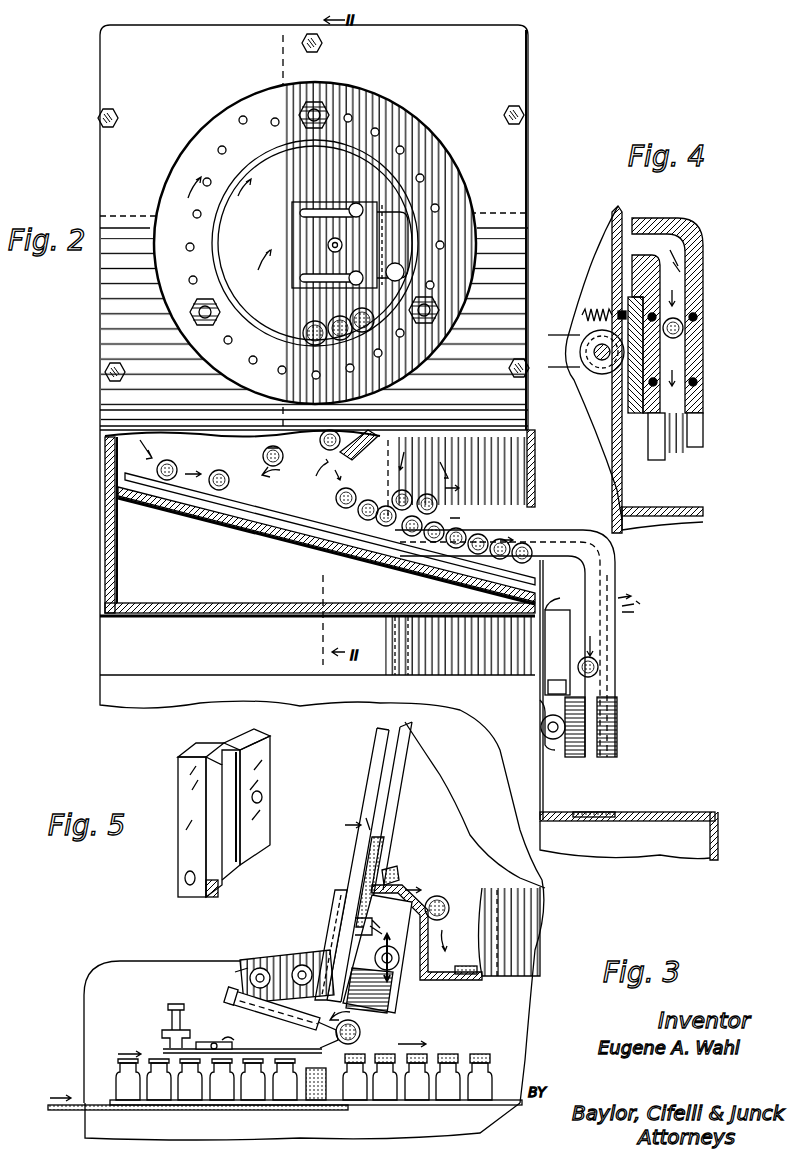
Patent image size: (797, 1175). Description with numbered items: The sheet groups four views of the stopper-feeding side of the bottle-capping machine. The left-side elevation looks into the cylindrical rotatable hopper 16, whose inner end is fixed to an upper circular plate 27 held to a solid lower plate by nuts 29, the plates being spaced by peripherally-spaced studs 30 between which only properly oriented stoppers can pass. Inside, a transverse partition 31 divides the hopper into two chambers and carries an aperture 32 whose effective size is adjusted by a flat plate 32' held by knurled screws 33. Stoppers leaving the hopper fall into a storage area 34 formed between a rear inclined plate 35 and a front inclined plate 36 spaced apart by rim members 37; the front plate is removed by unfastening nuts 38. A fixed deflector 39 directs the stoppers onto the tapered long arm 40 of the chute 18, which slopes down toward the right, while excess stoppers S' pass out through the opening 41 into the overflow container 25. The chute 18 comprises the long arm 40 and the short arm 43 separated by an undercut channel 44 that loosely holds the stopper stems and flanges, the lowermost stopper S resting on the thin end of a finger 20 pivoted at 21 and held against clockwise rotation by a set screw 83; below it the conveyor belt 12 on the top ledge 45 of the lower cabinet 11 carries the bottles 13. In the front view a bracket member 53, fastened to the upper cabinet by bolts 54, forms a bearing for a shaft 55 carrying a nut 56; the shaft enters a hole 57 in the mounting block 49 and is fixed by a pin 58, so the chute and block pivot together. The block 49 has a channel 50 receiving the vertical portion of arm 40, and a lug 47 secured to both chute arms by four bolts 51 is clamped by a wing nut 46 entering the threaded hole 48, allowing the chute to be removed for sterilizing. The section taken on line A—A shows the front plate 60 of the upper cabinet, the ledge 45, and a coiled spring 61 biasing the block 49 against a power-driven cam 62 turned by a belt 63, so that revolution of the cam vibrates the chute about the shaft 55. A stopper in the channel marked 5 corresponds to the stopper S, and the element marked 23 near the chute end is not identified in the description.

In FIG. 3, the lower cabinet 11 is at (92, 1131).
In FIG. 3, the conveyor belt 12 is at (80, 1090).
In FIG. 3, the bottles 13 is at (132, 1080).
In FIG. 2, the rotatable hopper 16 is at (232, 280).
In FIG. 2, the chute 18 is at (612, 700).
In FIG. 4, the chute 18 is at (700, 378).
In FIG. 3, the finger 20 is at (240, 1052).
In FIG. 3, the pivot 21 is at (228, 1040).
In FIG. 3, the lever 23 is at (330, 1034).
In FIG. 3, the overflow container 25 is at (436, 988).
In FIG. 2, the upper circular plate 27 is at (170, 193).
In FIG. 2, the nuts 29 is at (345, 95).
In FIG. 2, the studs 30 is at (420, 178).
In FIG. 2, the transverse partition 31 is at (195, 178).
In FIG. 2, the aperture 32 is at (396, 219).
In FIG. 2, the flat plate 32' is at (275, 276).
In FIG. 2, the knurled screws 33 is at (312, 205).
In FIG. 2, the storage area 34 is at (180, 522).
In FIG. 2, the rear inclined plate 35 is at (110, 560).
In FIG. 2, the front inclined plate 36 is at (110, 432).
In FIG. 2, the rim members 37 is at (108, 478).
In FIG. 2, the nuts 38 is at (302, 43).
In FIG. 2, the fixed deflector 39 is at (336, 496).
In FIG. 2, the long arm 40 is at (240, 505).
In FIG. 4, the long arm 40 is at (660, 450).
In FIG. 3, the long arm 40 is at (365, 866).
In FIG. 2, the opening 41 is at (540, 514).
In FIG. 2, the short arm 43 is at (566, 545).
In FIG. 4, the short arm 43 is at (695, 430).
In FIG. 3, the short arm 43 is at (380, 845).
In FIG. 2, the channel 44 is at (600, 580).
In FIG. 4, the channel 44 is at (680, 258).
In FIG. 4, the top ledge 45 is at (676, 512).
In FIG. 3, the top ledge 45 is at (660, 812).
In FIG. 3, the wing nut 46 is at (400, 985).
In FIG. 3, the lug 47 is at (396, 1008).
In FIG. 5, the threaded hole 48 is at (262, 797).
In FIG. 2, the mounting block 49 is at (548, 665).
In FIG. 4, the mounting block 49 is at (630, 405).
In FIG. 5, the mounting block 49 is at (182, 780).
In FIG. 3, the mounting block 49 is at (340, 897).
In FIG. 5, the channel 50 is at (214, 752).
In FIG. 4, the bolts 51 is at (697, 316).
In FIG. 3, the bolts 51 is at (442, 896).
In FIG. 2, the bracket member 53 is at (545, 712).
In FIG. 3, the bracket member 53 is at (280, 966).
In FIG. 2, the bolts 54 is at (546, 690).
In FIG. 3, the bolts 54 is at (260, 966).
In FIG. 2, the shaft 55 is at (540, 730).
In FIG. 3, the shaft 55 is at (225, 995).
In FIG. 2, the nut 56 is at (560, 742).
In FIG. 3, the nut 56 is at (228, 1006).
In FIG. 5, the hole 57 is at (185, 882).
In FIG. 5, the pin 58 is at (220, 882).
In FIG. 3, the pin 58 is at (300, 1032).
In FIG. 4, the front plate 60 is at (622, 492).
In FIG. 3, the front plate 60 is at (466, 820).
In FIG. 2, the coiled spring 61 is at (528, 630).
In FIG. 4, the coiled spring 61 is at (590, 300).
In FIG. 2, the cam 62 is at (560, 655).
In FIG. 4, the cam 62 is at (590, 335).
In FIG. 4, the belt 63 is at (575, 380).
In FIG. 3, the set screw 83 is at (168, 1008).
In FIG. 4, the stopper 5 is at (686, 330).
In FIG. 2, the lowermost stopper S is at (321, 412).
In FIG. 3, the lowermost stopper S is at (416, 1088).
In FIG. 2, the excess stoppers S' is at (362, 548).
In FIG. 3, the excess stoppers S' is at (437, 855).
In FIG. 3, the section line A— A is at (294, 901).